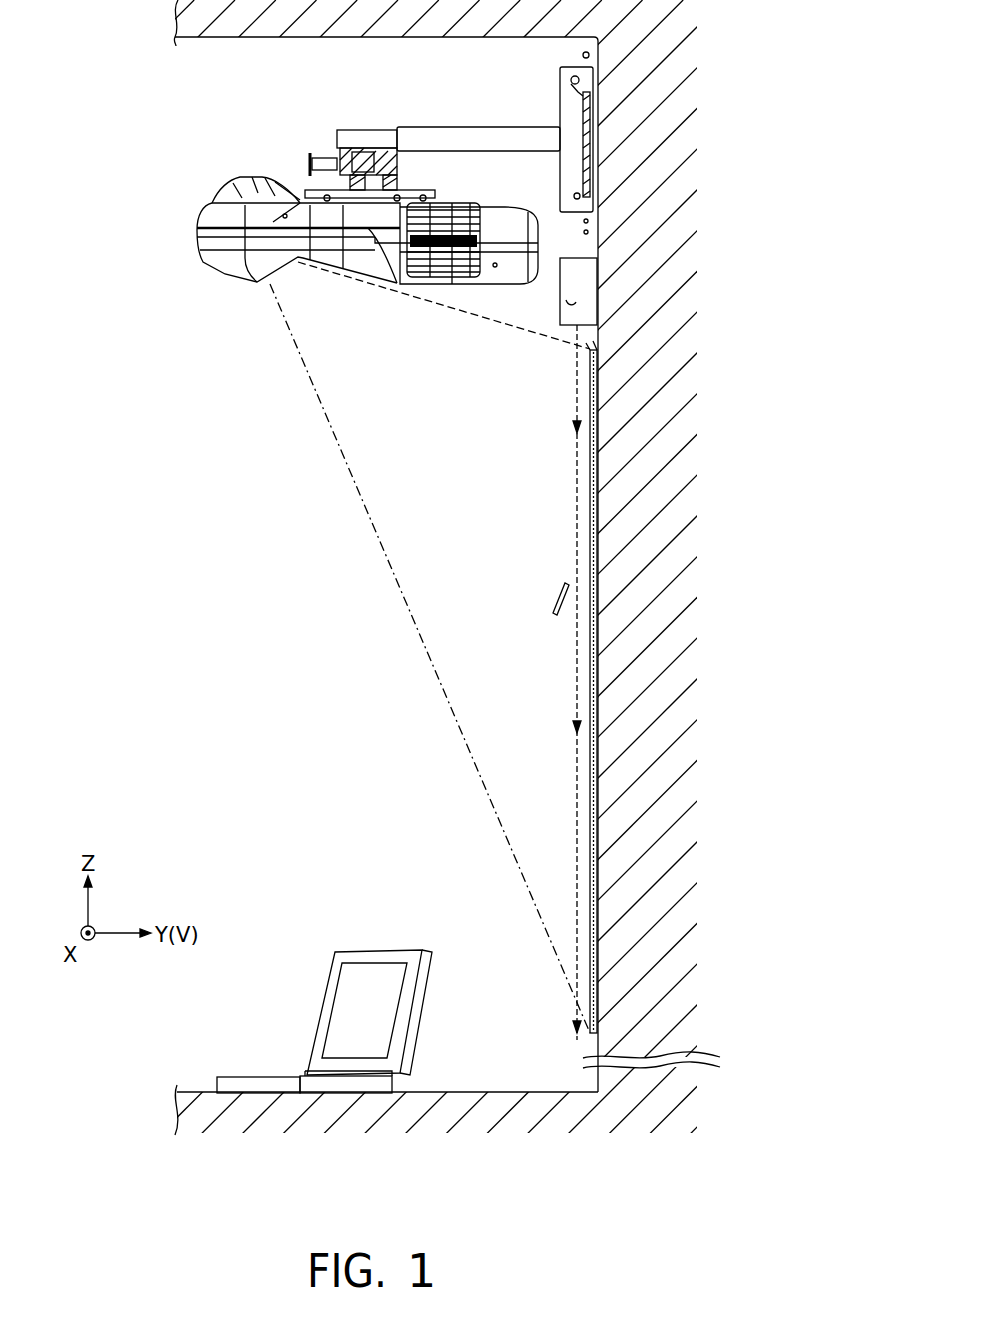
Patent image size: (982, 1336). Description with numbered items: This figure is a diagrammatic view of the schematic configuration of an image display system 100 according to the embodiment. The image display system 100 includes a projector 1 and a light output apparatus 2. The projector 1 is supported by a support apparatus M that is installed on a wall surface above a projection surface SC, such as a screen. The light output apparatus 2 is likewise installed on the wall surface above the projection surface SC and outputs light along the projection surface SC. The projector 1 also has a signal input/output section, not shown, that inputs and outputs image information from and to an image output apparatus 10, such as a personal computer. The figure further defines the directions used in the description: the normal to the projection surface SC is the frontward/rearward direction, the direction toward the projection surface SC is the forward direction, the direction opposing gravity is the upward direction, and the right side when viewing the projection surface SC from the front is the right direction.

The image display system 100 is at (134, 156).
The projector 1 is at (207, 203).
The support apparatus M is at (447, 125).
The light output apparatus 2 is at (562, 312).
The projection surface SC is at (592, 806).
The image output apparatus 10 is at (262, 1075).